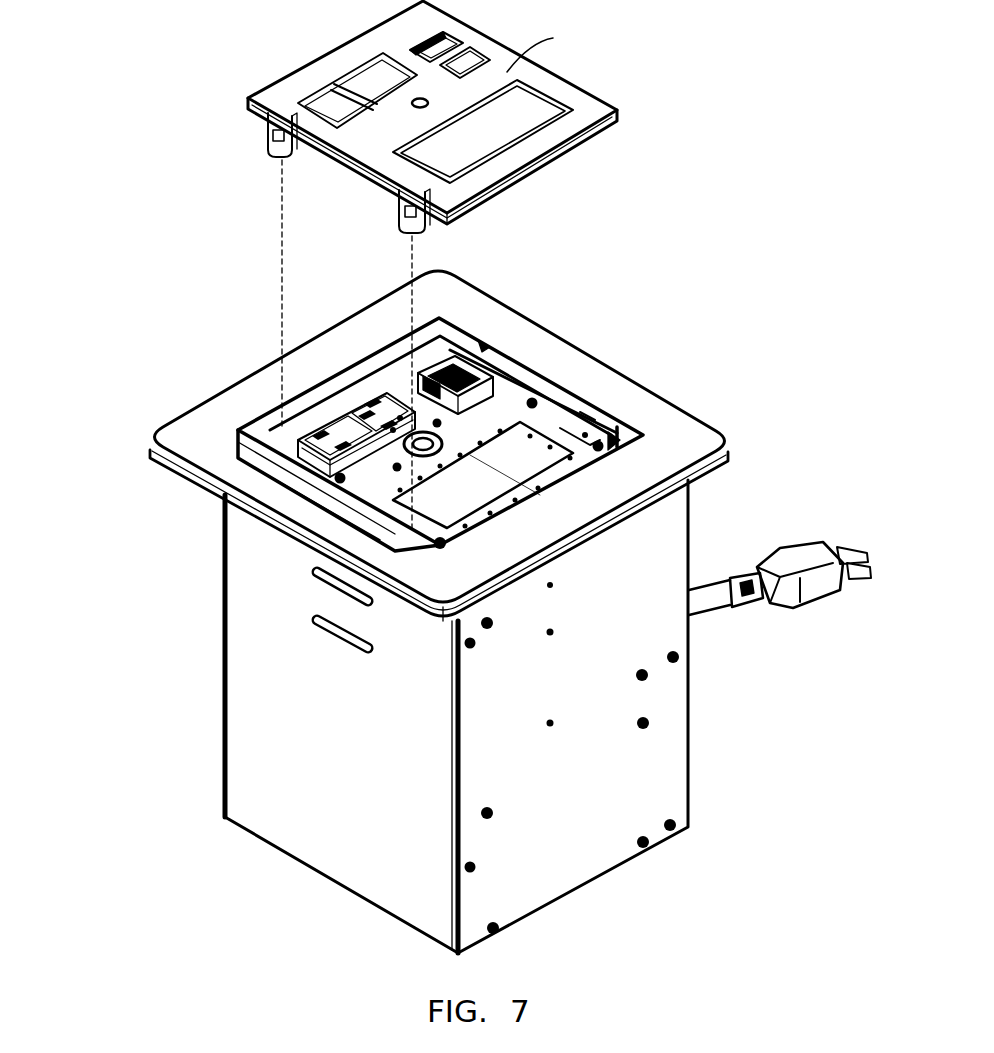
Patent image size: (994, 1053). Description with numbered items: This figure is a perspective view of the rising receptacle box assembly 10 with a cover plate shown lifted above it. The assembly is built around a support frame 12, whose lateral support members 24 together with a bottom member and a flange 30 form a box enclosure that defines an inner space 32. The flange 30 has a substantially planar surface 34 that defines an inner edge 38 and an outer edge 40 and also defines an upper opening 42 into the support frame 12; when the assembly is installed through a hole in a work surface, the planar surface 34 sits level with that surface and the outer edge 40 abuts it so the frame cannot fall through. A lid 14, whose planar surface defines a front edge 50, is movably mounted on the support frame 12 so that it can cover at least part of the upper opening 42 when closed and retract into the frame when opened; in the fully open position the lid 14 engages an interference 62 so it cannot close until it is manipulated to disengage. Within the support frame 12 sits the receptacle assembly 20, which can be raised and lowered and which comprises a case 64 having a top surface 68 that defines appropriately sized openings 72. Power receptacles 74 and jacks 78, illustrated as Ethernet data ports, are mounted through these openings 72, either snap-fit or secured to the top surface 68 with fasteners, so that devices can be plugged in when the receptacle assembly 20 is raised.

The rising receptacle box assembly 10 is at (200, 108).
The support frame 12 is at (336, 865).
The lid 14 is at (518, 378).
The receptacle assembly 20 is at (587, 417).
The lateral support members 24 is at (585, 865).
The flange 30 is at (218, 402).
The inner space 32 is at (605, 425).
The planar surface 34 is at (192, 423).
The inner edge 38 is at (487, 347).
The outer edge 40 is at (703, 473).
The upper opening 42 is at (620, 440).
The front edge 50 is at (547, 395).
The interference 62 is at (587, 430).
The case 64 is at (373, 495).
The top surface 68 is at (363, 483).
The openings 72 is at (440, 470).
The power receptacles 74 is at (378, 402).
The jacks 78 is at (468, 345).